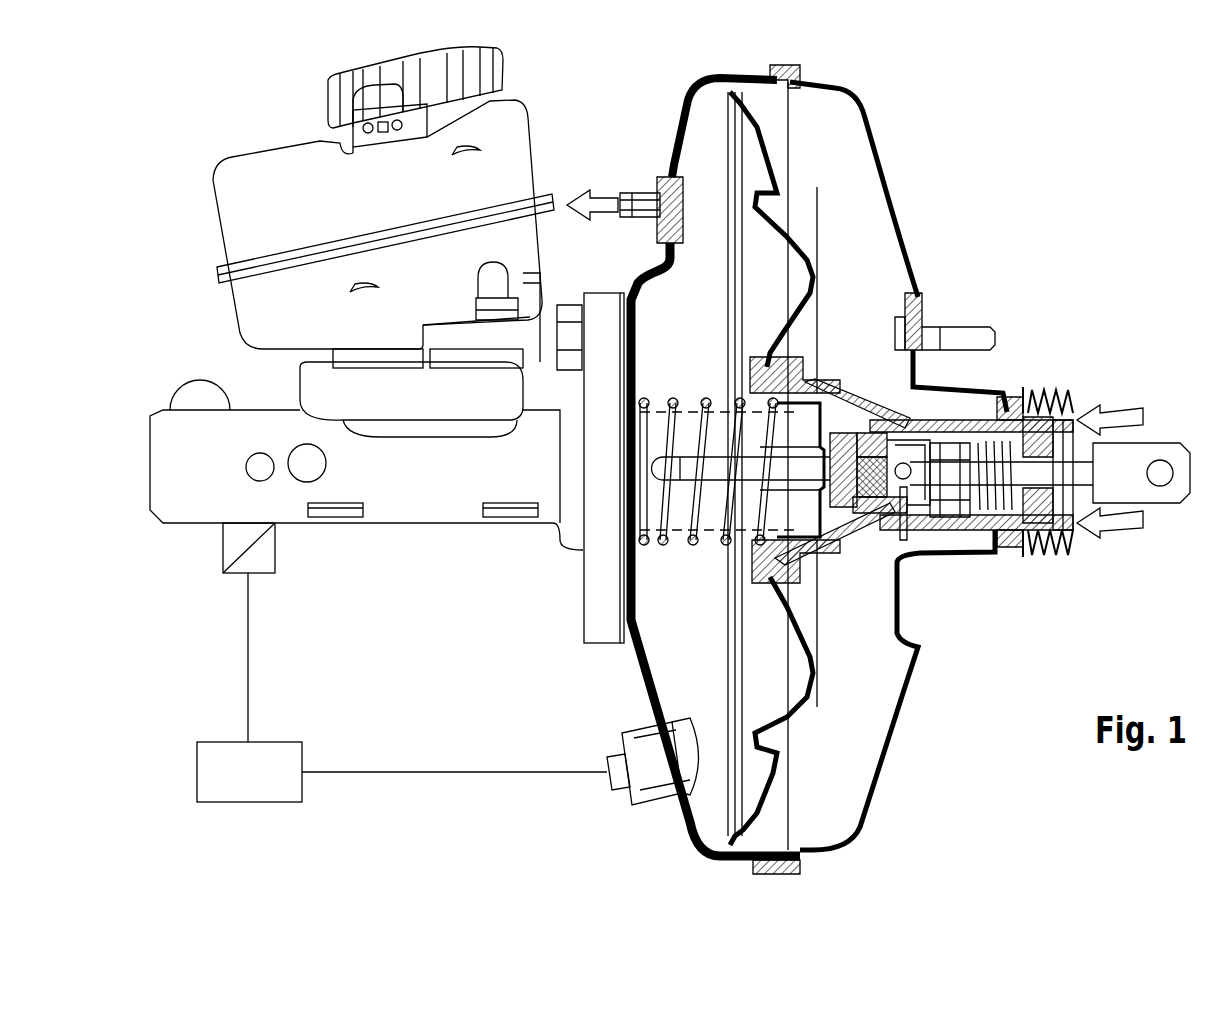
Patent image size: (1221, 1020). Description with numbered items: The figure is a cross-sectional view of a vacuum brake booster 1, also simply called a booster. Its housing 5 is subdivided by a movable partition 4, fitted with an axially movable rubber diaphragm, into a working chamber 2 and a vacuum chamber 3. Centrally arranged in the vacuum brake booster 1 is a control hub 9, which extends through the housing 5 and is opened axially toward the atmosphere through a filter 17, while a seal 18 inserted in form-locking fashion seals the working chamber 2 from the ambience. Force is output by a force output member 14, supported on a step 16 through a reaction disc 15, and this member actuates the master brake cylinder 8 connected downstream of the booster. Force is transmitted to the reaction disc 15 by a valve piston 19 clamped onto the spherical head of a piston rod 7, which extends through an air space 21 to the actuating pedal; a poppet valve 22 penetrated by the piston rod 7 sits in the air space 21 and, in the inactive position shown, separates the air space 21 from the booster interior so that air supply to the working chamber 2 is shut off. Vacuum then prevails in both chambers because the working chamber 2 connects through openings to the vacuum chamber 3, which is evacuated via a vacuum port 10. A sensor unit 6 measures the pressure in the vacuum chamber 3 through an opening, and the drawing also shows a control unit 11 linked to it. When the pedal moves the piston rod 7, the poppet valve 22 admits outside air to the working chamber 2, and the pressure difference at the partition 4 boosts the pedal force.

The vacuum brake booster 1 is at (925, 146).
The working chamber 2 is at (852, 680).
The vacuum chamber 3 is at (682, 680).
The movable partition 4 is at (778, 200).
The housing 5 is at (905, 230).
The sensor unit 6 is at (640, 793).
The piston rod 7 is at (1137, 455).
The master brake cylinder 8 is at (398, 525).
The control hub 9 is at (940, 530).
The vacuum port 10 is at (660, 176).
The electronic control unit 11 is at (215, 750).
The force output member 14 is at (687, 460).
The reaction disc 15 is at (835, 520).
The step 16 is at (863, 505).
The filter 17 is at (1048, 510).
The seal 18 is at (1015, 538).
The valve piston 19 is at (872, 418).
The air space 21 is at (992, 520).
The poppet valve 22 is at (930, 413).